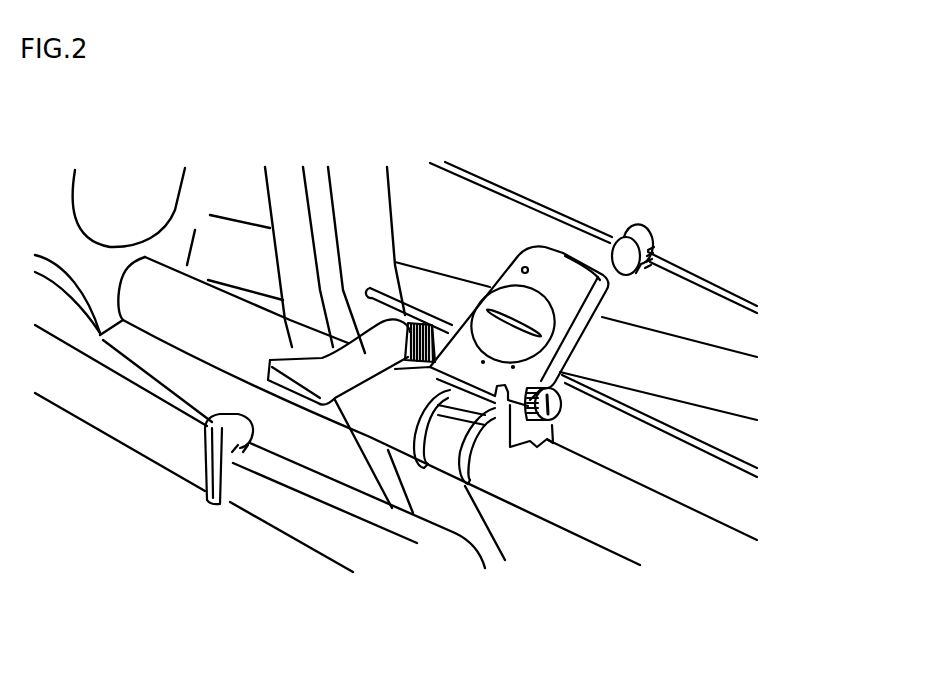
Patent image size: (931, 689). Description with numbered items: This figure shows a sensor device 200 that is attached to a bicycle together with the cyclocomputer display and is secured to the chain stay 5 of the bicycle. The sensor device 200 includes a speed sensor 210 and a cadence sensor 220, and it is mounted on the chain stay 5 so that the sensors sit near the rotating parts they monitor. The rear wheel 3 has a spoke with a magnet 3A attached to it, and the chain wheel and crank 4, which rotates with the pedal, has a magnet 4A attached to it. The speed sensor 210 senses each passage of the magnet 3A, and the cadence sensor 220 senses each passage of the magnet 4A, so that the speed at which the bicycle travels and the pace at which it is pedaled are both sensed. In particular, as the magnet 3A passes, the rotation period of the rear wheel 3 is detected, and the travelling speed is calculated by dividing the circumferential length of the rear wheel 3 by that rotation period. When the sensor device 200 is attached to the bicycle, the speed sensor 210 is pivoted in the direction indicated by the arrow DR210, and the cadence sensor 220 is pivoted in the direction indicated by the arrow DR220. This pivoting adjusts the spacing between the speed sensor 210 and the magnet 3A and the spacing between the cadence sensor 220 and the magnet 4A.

The rear wheel 3 is at (318, 187).
The magnet 3A is at (627, 255).
The chain wheel and crank 4 is at (287, 522).
The magnet 4A is at (228, 505).
The chain stay 5 is at (567, 507).
The sensor device 200 is at (525, 98).
The speed sensor 210 is at (553, 267).
The cadence sensor 220 is at (352, 318).
The arrow DR220 is at (247, 408).
The arrow DR210 is at (543, 295).